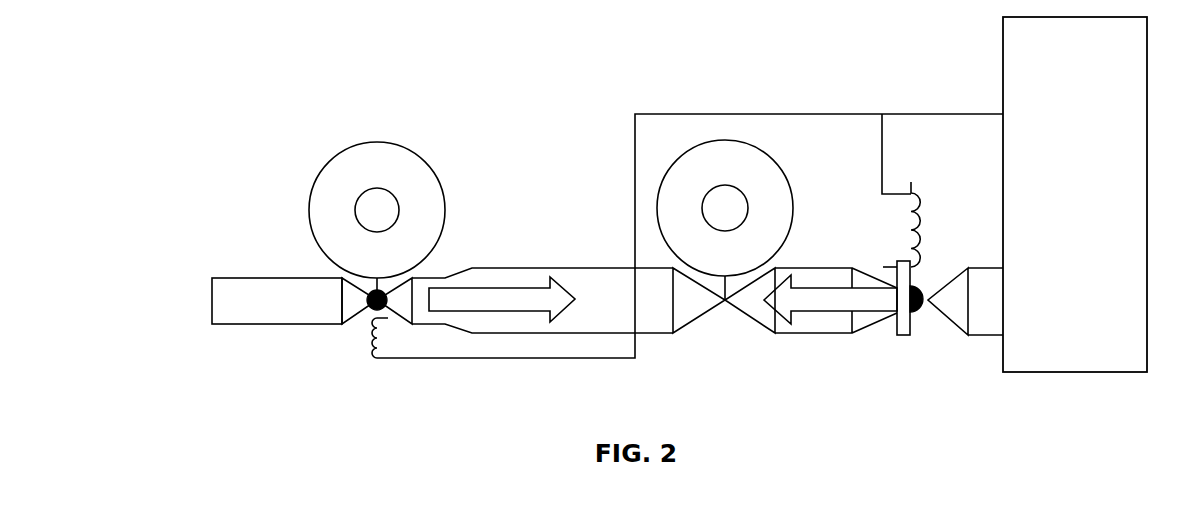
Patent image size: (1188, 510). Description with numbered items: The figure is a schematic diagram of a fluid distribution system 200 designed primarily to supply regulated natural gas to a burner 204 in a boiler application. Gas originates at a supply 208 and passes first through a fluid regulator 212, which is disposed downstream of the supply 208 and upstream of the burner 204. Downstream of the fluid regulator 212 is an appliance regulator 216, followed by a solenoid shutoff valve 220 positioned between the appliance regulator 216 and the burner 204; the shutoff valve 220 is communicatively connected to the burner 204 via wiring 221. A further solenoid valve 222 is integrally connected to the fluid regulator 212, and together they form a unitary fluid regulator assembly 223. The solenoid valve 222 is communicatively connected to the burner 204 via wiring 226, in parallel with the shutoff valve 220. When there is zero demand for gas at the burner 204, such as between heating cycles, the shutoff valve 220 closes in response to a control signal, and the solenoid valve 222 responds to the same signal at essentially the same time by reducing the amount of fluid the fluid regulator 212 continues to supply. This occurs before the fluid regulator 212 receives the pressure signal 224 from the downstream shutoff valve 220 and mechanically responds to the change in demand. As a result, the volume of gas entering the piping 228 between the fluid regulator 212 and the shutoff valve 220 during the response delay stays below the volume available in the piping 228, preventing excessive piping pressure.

The fluid distribution system 200 is at (602, 231).
The burner 204 is at (1065, 383).
The supply 208 is at (270, 324).
The fluid regulator 212 is at (380, 132).
The appliance regulator 216 is at (728, 126).
The solenoid shutoff valve 220 is at (903, 347).
The wiring 221 is at (885, 162).
The solenoid valve 222 is at (358, 345).
The unitary fluid regulator assembly 223 is at (331, 194).
The pressure signal 224 is at (808, 287).
The wiring 226 is at (490, 361).
The piping 228 is at (520, 258).